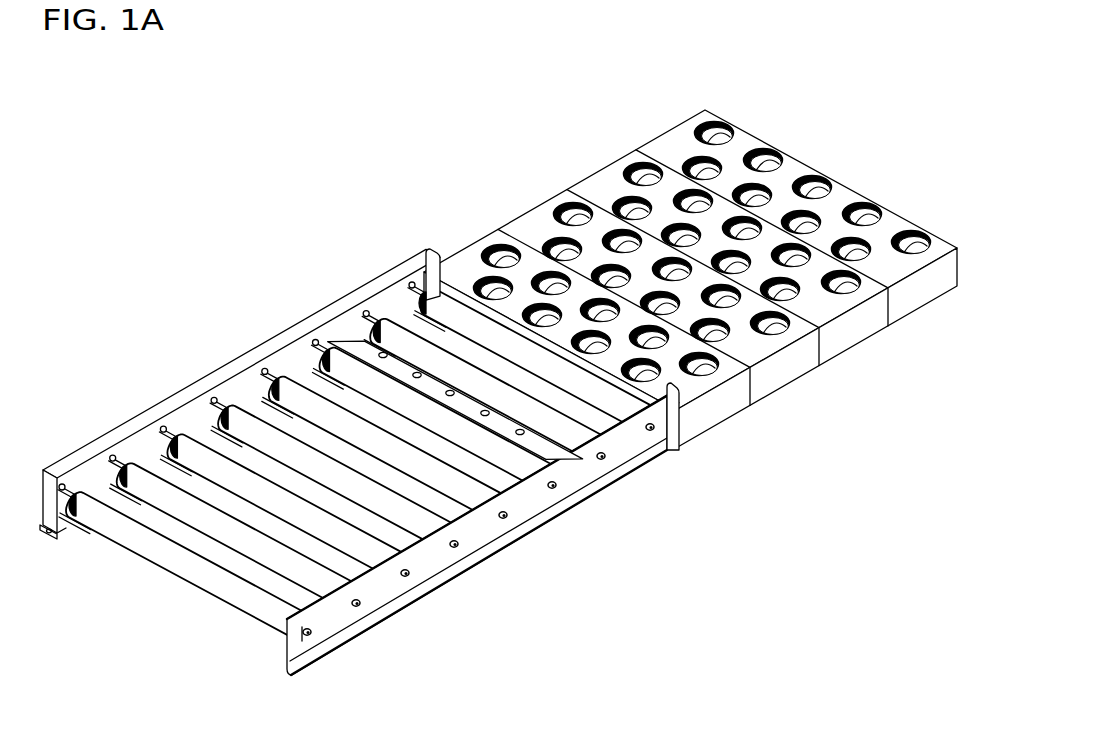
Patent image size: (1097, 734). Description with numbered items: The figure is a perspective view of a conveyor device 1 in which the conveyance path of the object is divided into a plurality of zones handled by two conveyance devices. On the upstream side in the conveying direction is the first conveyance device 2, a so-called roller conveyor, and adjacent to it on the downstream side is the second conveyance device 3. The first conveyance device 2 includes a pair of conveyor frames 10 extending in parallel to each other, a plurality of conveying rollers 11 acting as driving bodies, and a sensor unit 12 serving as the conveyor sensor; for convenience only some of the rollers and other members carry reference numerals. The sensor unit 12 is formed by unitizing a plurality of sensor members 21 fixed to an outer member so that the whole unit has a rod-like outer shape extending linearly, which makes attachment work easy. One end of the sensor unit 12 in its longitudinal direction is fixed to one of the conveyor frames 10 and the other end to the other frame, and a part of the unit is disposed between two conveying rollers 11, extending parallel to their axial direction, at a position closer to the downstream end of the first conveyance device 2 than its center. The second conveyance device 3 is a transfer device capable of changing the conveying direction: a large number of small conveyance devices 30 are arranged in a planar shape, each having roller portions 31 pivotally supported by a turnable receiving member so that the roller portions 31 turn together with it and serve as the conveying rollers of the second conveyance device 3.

The conveyor device 1 is at (705, 97).
The first conveyance device 2 is at (359, 462).
The second conveyance device 3 is at (691, 262).
The conveyor frame 10 is at (52, 537).
The conveying roller 11 is at (434, 300).
The sensor unit 12 is at (494, 469).
The sensor member 21 is at (487, 420).
The small conveyance device 30 is at (638, 160).
The roller portion 31 is at (660, 165).